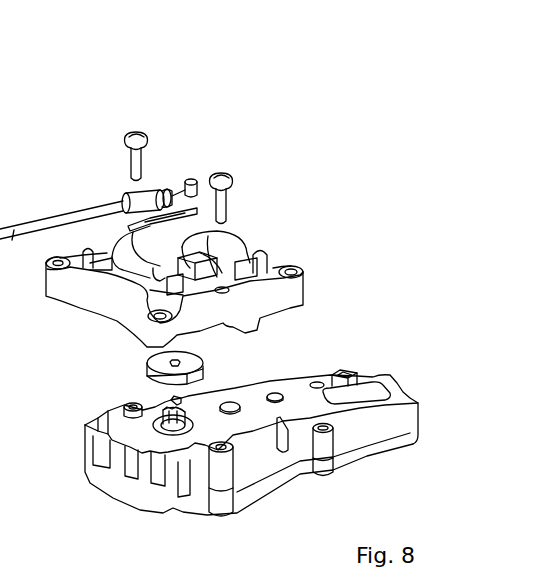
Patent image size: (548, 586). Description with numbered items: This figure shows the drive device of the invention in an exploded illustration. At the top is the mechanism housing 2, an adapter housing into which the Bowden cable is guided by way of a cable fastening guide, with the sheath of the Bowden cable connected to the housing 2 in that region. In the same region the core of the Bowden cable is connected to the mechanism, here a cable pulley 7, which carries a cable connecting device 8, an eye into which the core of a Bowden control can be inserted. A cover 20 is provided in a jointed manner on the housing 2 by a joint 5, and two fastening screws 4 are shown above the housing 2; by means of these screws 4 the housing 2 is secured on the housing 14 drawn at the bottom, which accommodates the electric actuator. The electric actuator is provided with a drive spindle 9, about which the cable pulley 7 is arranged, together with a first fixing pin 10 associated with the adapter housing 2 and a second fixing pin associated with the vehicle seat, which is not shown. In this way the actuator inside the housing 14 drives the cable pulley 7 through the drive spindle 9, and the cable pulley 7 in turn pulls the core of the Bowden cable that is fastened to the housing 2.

The mechanism housing 2 is at (280, 297).
The fastening screws 4 is at (220, 169).
The joint 5 is at (197, 233).
The cable pulley 7 is at (157, 365).
The cable connecting device 8 is at (162, 377).
The drive spindle 9 is at (180, 431).
The first fixing pin 10 is at (232, 395).
The housing 14 is at (372, 457).
The cover 20 is at (194, 213).